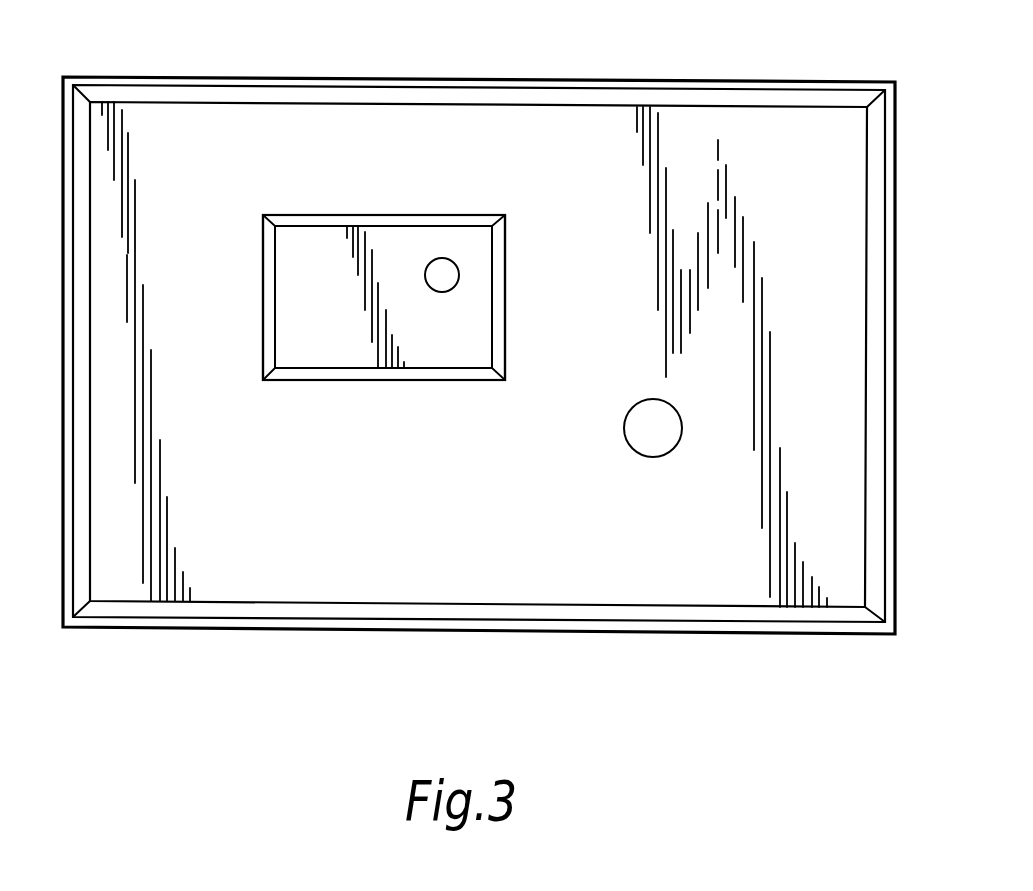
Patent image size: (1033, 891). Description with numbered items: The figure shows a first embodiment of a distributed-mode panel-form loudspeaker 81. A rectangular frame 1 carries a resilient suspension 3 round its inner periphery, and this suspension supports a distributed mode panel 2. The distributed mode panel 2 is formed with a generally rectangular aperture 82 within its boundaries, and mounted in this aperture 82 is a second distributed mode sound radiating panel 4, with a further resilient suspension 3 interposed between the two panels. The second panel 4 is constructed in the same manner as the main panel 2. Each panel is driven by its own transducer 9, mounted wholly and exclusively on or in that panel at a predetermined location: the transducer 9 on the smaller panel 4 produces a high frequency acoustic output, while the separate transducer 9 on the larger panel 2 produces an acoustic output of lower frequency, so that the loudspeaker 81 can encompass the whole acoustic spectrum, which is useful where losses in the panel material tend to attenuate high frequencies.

The rectangular frame 1 is at (192, 78).
The distributed mode panel 2 is at (232, 572).
The resilient suspension 3 is at (423, 373).
The second distributed mode sound radiating panel 4 is at (342, 347).
The transducer 9 is at (445, 267).
The panel-form loudspeaker 81 is at (682, 651).
The rectangular aperture 82 is at (328, 215).